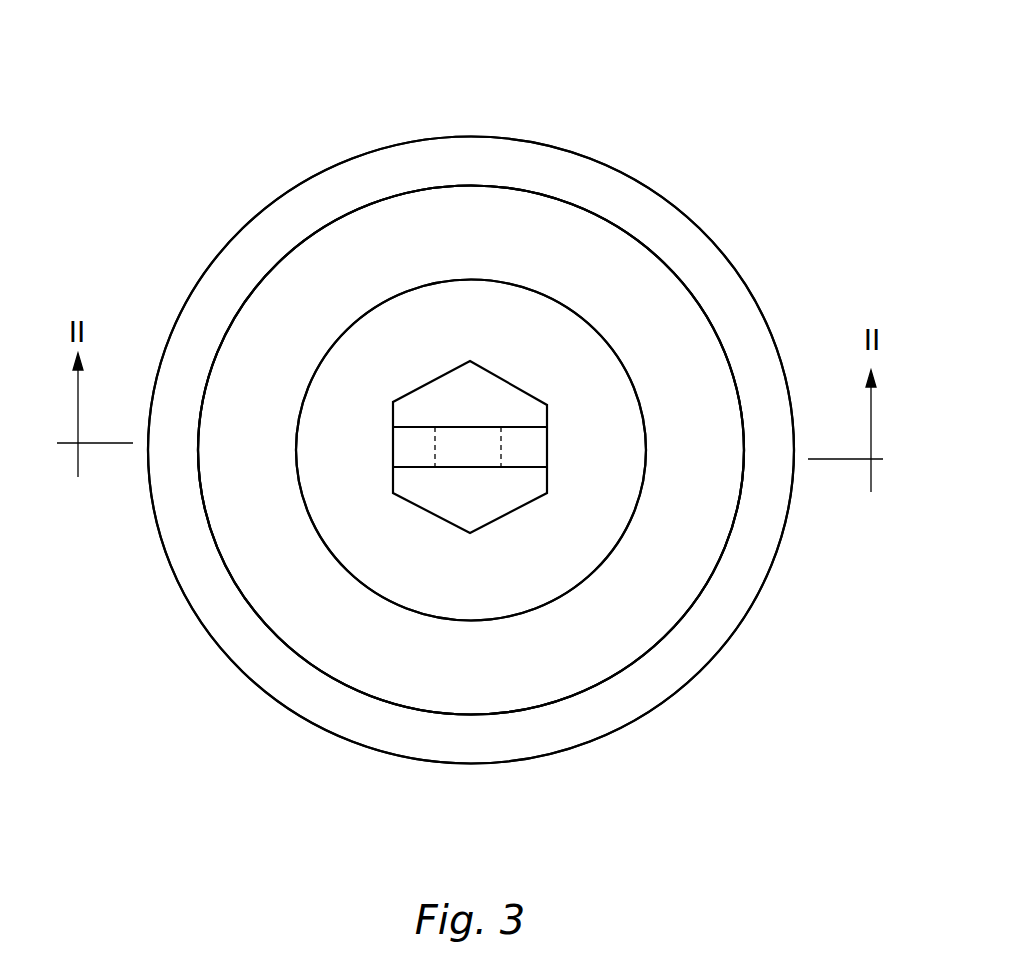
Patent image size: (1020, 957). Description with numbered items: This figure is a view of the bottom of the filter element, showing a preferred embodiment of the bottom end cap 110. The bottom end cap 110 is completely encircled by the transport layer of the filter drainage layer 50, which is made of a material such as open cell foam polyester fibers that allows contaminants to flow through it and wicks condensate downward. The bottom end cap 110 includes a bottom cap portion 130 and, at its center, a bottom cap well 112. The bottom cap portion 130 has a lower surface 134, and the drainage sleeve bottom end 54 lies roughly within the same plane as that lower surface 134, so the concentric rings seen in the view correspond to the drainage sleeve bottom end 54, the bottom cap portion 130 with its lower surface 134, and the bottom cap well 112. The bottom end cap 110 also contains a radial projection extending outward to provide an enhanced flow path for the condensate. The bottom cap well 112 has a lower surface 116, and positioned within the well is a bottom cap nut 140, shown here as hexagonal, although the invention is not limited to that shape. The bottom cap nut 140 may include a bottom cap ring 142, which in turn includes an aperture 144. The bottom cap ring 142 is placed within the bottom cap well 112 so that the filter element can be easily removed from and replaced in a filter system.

The filter drainage layer 50 is at (608, 715).
The drainage sleeve bottom end 54 is at (688, 247).
The bottom end cap 110 is at (510, 208).
The bottom cap well 112 is at (617, 427).
The lower surface 116 is at (540, 570).
The bottom cap portion 130 is at (485, 695).
The lower surface 134 is at (347, 665).
The bottom cap nut 140 is at (407, 487).
The bottom cap ring 142 is at (403, 458).
The aperture 144 is at (468, 443).